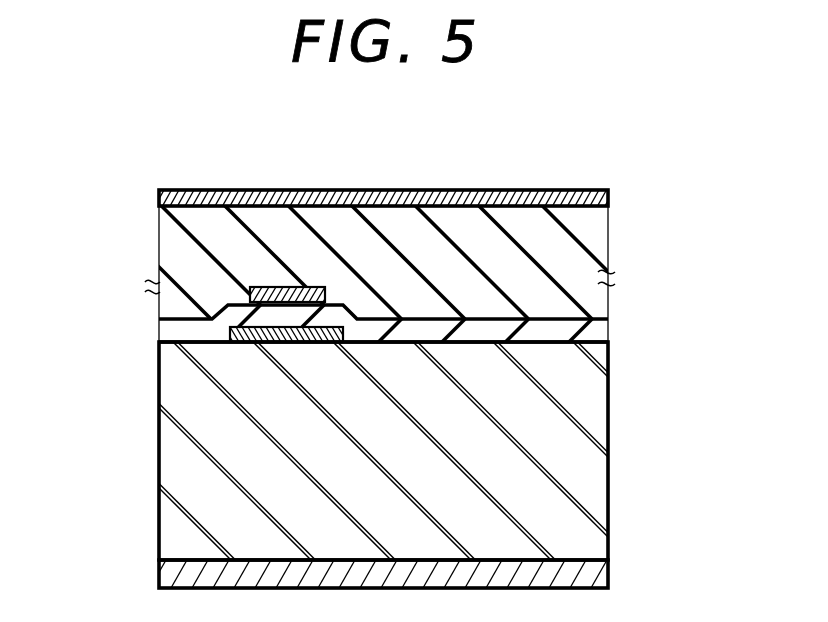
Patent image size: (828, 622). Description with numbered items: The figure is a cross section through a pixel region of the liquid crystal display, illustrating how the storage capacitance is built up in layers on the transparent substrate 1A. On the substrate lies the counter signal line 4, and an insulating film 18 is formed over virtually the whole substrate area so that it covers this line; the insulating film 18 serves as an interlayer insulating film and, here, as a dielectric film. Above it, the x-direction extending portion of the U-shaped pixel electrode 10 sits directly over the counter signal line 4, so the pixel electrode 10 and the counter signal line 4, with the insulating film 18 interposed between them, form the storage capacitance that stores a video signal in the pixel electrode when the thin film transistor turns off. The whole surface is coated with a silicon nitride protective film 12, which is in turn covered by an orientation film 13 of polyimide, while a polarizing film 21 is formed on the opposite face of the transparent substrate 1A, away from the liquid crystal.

The transparent substrate 1A is at (178, 440).
The counter signal line 4 is at (232, 333).
The pixel electrode 10 is at (266, 287).
The protective film 12 is at (600, 249).
The orientation film 13 is at (553, 190).
The insulating film 18 is at (597, 331).
The polarizing film 21 is at (598, 571).